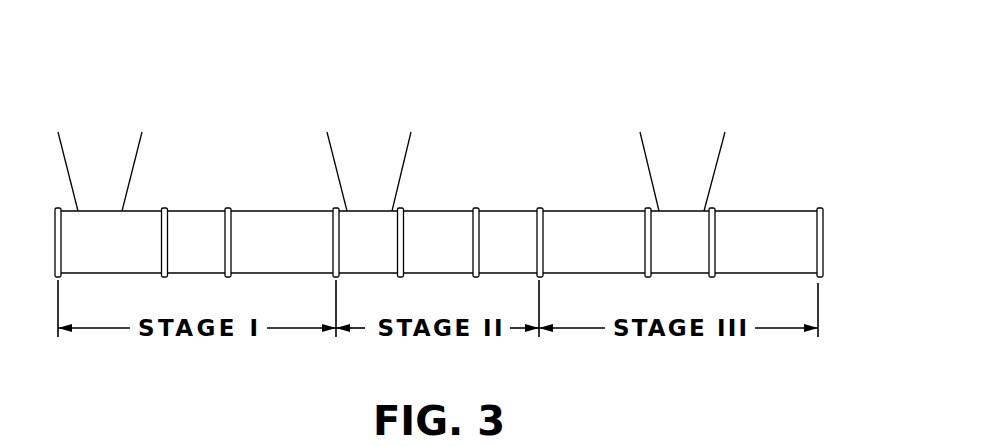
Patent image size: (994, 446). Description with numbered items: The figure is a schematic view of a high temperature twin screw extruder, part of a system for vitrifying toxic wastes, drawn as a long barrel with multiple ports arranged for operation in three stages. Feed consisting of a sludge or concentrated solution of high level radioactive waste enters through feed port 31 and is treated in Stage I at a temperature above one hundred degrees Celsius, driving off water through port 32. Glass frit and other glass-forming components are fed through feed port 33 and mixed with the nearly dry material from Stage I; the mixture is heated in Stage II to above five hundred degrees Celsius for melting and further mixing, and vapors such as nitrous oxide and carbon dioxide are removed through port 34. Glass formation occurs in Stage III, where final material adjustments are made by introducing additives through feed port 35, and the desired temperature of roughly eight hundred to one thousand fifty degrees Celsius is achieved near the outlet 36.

The feed port 31 is at (100, 144).
The port 32 is at (197, 168).
The feed port 33 is at (369, 144).
The port 34 is at (508, 168).
The feed port 35 is at (682, 144).
The outlet 36 is at (807, 237).